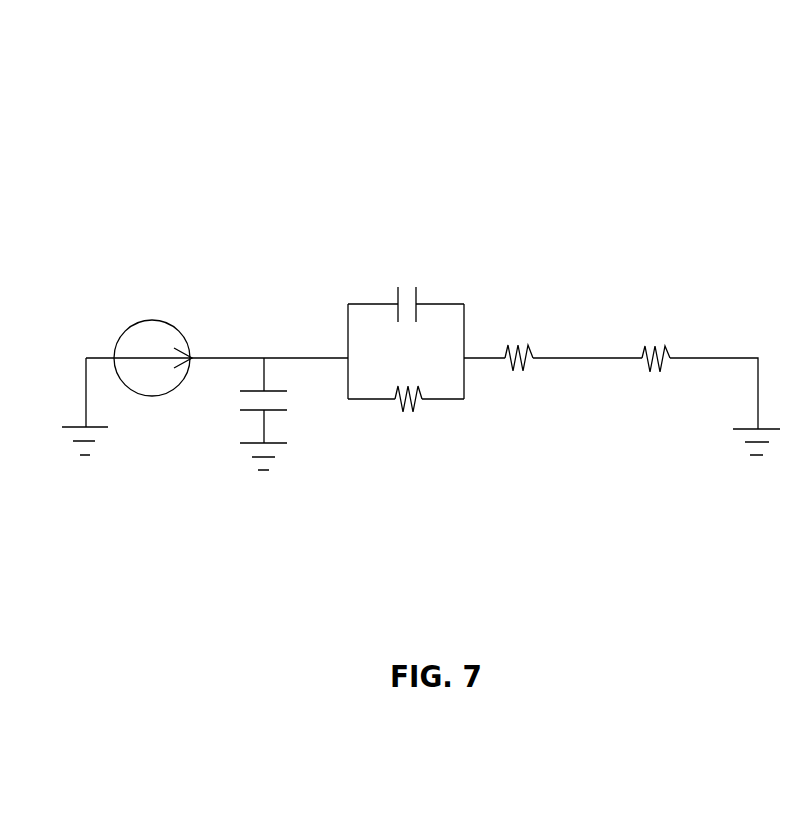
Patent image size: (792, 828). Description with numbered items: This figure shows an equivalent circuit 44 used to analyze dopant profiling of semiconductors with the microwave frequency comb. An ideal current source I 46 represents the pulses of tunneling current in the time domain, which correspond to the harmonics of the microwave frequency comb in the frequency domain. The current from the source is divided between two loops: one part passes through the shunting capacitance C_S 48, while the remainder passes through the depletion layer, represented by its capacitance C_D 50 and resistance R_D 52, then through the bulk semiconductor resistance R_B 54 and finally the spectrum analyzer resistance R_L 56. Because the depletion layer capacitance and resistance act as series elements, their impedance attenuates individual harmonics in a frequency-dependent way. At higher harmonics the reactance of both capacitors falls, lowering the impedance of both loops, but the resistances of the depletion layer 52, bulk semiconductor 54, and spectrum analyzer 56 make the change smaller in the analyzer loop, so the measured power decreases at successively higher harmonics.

The equivalent circuit 44 is at (385, 217).
The ideal current source I 46 is at (130, 313).
The shunting capacitance C_S 48 is at (232, 400).
The depletion layer capacitance C_D 50 is at (416, 280).
The depletion layer resistance R_D 52 is at (392, 416).
The bulk semiconductor resistance R_B 54 is at (521, 330).
The spectrum analyzer resistance R_L 56 is at (657, 330).